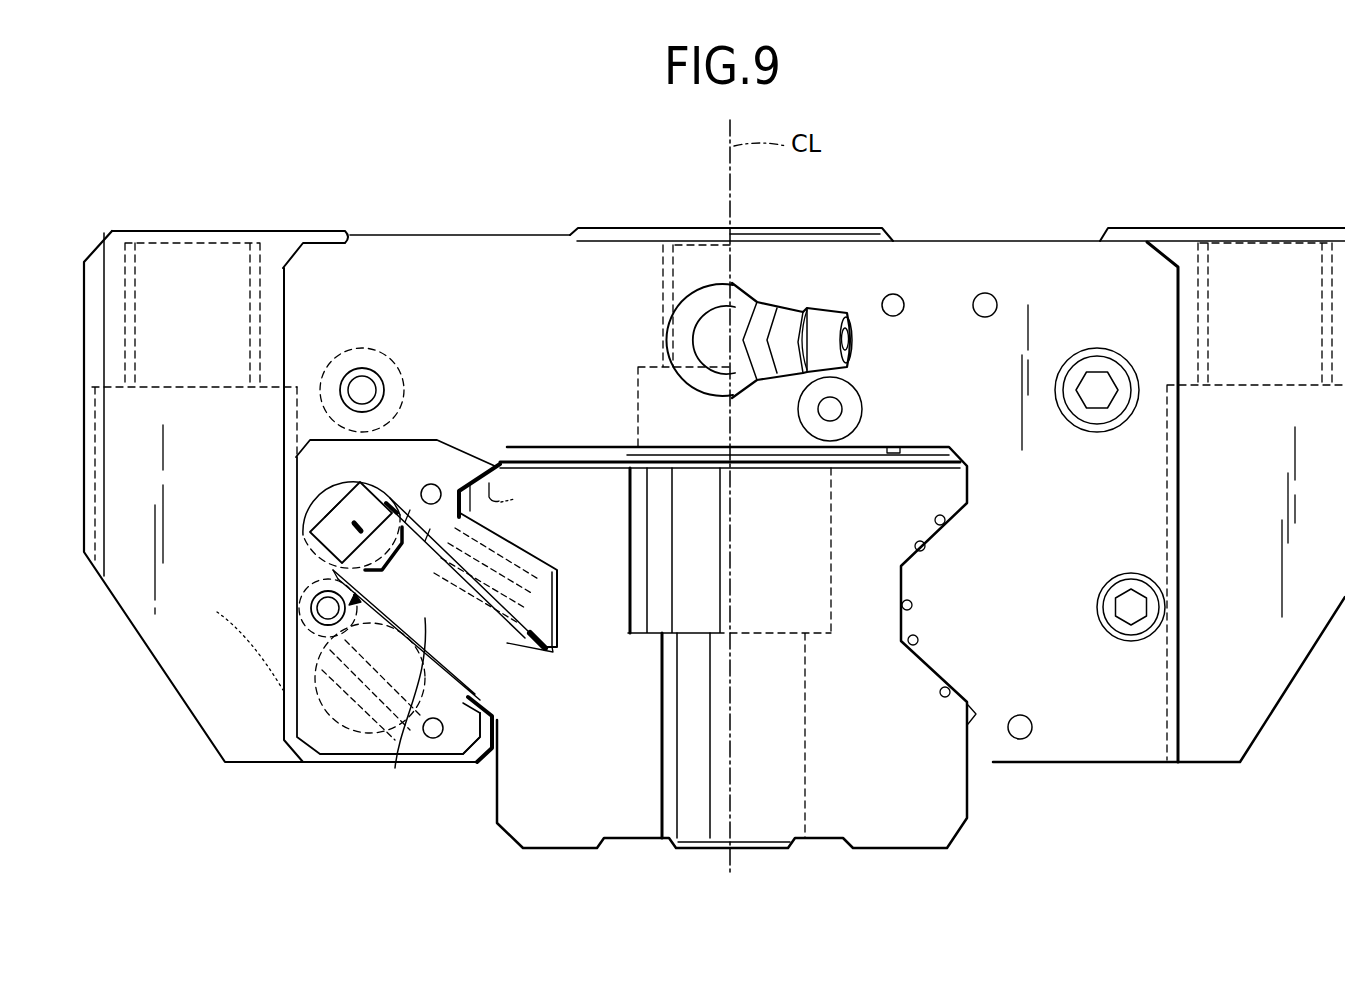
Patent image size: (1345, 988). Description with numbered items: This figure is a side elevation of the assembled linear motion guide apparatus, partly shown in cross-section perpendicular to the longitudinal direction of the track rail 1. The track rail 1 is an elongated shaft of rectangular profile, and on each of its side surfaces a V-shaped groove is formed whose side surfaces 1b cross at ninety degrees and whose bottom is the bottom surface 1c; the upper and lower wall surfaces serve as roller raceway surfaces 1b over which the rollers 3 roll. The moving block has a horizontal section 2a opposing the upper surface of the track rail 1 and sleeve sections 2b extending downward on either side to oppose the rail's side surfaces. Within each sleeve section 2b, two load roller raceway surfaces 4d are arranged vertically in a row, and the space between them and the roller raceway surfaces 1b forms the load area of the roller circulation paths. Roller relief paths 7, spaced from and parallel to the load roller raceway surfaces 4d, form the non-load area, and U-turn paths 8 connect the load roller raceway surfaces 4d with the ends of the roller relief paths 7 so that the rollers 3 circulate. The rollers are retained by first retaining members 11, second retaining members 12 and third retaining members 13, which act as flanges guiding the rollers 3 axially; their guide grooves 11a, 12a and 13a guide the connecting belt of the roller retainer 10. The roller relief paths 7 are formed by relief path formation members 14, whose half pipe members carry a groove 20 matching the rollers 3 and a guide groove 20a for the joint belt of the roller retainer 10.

The track rail 1 is at (630, 820).
The roller raceway surface 1b is at (505, 522).
The bottom surface 1c is at (899, 606).
The horizontal section 2a is at (858, 280).
The sleeve section 2b is at (255, 737).
The roller 3 is at (362, 490).
The load roller raceway surface 4d is at (522, 554).
The roller relief path 7 is at (315, 512).
The U-turn path 8 is at (395, 770).
The roller retainer 10 is at (400, 503).
The first retaining member 11 is at (497, 725).
The guide groove 11a is at (477, 740).
The second retaining member 12 is at (547, 582).
The guide groove 12a is at (548, 584).
The third retaining member 13 is at (486, 495).
The guide groove 13a is at (524, 486).
The relief path formation member 14 is at (340, 757).
The groove 20 is at (363, 490).
The guide groove 20a is at (388, 490).